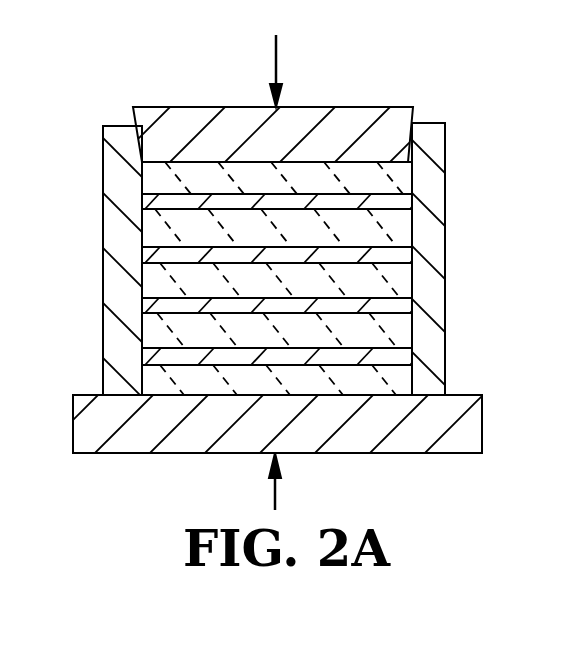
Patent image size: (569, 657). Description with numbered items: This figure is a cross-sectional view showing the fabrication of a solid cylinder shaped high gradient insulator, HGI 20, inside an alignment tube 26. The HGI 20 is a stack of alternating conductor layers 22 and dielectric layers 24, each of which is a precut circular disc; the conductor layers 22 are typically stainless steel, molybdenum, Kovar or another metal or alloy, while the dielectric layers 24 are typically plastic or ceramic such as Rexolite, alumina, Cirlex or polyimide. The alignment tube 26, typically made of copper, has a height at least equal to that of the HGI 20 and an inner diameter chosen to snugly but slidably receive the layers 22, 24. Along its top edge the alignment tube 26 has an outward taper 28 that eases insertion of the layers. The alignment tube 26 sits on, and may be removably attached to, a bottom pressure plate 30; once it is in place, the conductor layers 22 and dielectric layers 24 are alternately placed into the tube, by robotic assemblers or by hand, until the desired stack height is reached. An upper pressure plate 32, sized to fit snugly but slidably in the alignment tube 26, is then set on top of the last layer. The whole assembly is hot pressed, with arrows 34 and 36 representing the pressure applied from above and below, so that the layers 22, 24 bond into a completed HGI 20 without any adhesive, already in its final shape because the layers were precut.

The HGI 20 is at (344, 77).
The conductor layers 22 is at (408, 193).
The dielectric layers 24 is at (152, 185).
The alignment tube 26 is at (445, 300).
The outward taper 28 is at (415, 133).
The bottom pressure plate 30 is at (437, 453).
The upper pressure plate 32 is at (205, 107).
The arrow 34 is at (276, 50).
The arrow 36 is at (275, 490).